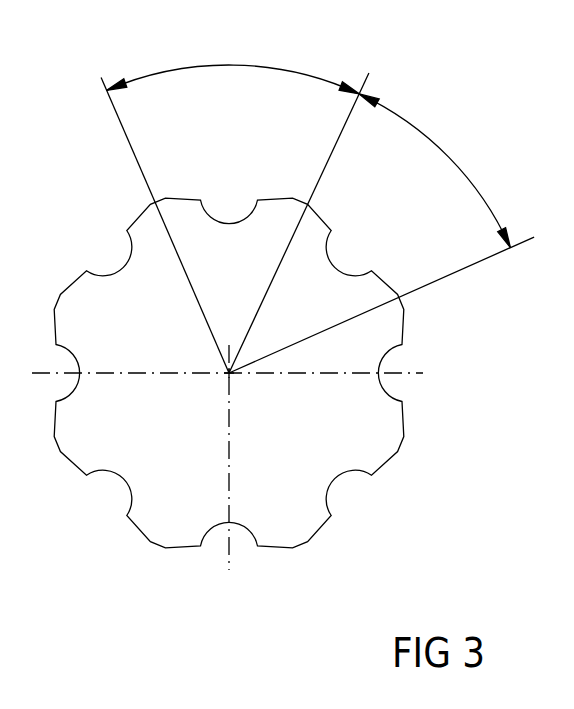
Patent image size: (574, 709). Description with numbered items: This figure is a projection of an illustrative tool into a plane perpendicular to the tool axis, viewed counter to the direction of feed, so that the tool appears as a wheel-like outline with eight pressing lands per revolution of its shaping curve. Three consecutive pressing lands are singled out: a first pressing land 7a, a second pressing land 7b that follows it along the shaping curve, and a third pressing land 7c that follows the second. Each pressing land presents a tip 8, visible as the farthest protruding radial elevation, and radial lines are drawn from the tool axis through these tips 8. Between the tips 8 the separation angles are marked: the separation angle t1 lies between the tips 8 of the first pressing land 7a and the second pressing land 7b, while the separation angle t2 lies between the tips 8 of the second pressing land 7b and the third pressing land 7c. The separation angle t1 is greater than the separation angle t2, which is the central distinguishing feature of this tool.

The first pressing land 7a is at (148, 219).
The second pressing land 7b is at (293, 213).
The third pressing land 7c is at (392, 316).
The tip 8 is at (160, 218).
The separation angle t1 is at (176, 68).
The separation angle t2 is at (418, 128).